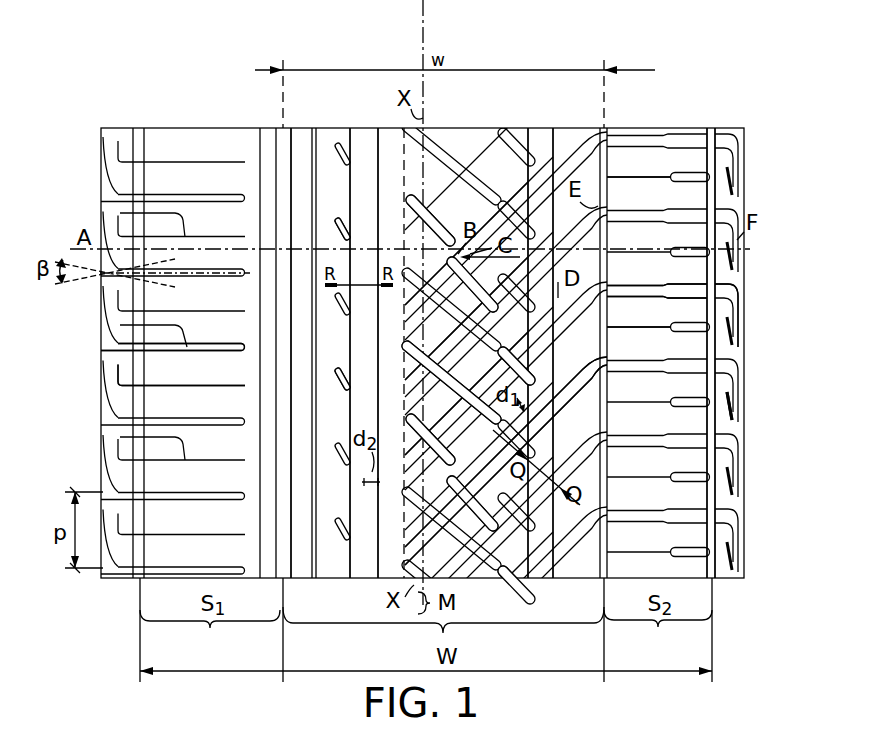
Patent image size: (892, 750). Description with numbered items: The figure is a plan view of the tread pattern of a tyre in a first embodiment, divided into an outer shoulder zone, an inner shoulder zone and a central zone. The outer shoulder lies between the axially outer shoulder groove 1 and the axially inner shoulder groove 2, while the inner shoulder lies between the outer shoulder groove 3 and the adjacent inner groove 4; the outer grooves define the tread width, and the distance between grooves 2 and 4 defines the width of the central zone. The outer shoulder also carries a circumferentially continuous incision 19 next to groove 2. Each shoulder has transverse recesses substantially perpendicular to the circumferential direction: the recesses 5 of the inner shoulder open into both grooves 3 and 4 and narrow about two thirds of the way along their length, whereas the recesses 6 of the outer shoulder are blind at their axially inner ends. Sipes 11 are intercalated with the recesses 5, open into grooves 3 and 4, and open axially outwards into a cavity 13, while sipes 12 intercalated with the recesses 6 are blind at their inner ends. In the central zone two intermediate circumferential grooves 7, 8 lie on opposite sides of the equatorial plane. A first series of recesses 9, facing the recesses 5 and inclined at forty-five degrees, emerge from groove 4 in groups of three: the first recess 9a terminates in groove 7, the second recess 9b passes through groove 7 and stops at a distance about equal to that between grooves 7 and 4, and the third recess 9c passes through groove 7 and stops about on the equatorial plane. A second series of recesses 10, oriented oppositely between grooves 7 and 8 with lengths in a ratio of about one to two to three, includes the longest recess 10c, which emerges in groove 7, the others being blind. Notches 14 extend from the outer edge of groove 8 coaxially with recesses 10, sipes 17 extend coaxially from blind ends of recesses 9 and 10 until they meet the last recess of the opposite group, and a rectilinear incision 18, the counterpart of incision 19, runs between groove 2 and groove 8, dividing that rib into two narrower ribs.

The axially outer circumferential shoulder groove 1 is at (135, 440).
The axially inner circumferential shoulder groove 2 is at (290, 366).
The axially outer circumferential shoulder groove 3 is at (740, 357).
The axially inner circumferential shoulder groove 4 is at (720, 398).
The transverse shoulder recess 5 is at (630, 288).
The transverse shoulder recess 6 is at (176, 324).
The intermediate circumferential groove 7 is at (553, 135).
The intermediate circumferential groove 8 is at (367, 140).
The central transverse recess of the first series 9 is at (550, 386).
The first recess of the group 9a is at (556, 334).
The second recess of the group 9b is at (493, 298).
The third recess of the group 9c is at (472, 438).
The central transverse recess of the second series 10 is at (432, 357).
The longest recess of the second series 10c is at (450, 312).
The sipe 11 is at (640, 180).
The sipe 12 is at (185, 217).
The cavity 13 is at (690, 336).
The notch 14 is at (333, 383).
The sipe 17 is at (470, 401).
The circumferentially continuous rectilinear incision 18 is at (316, 210).
The circumferentially continuous incision 19 is at (245, 396).